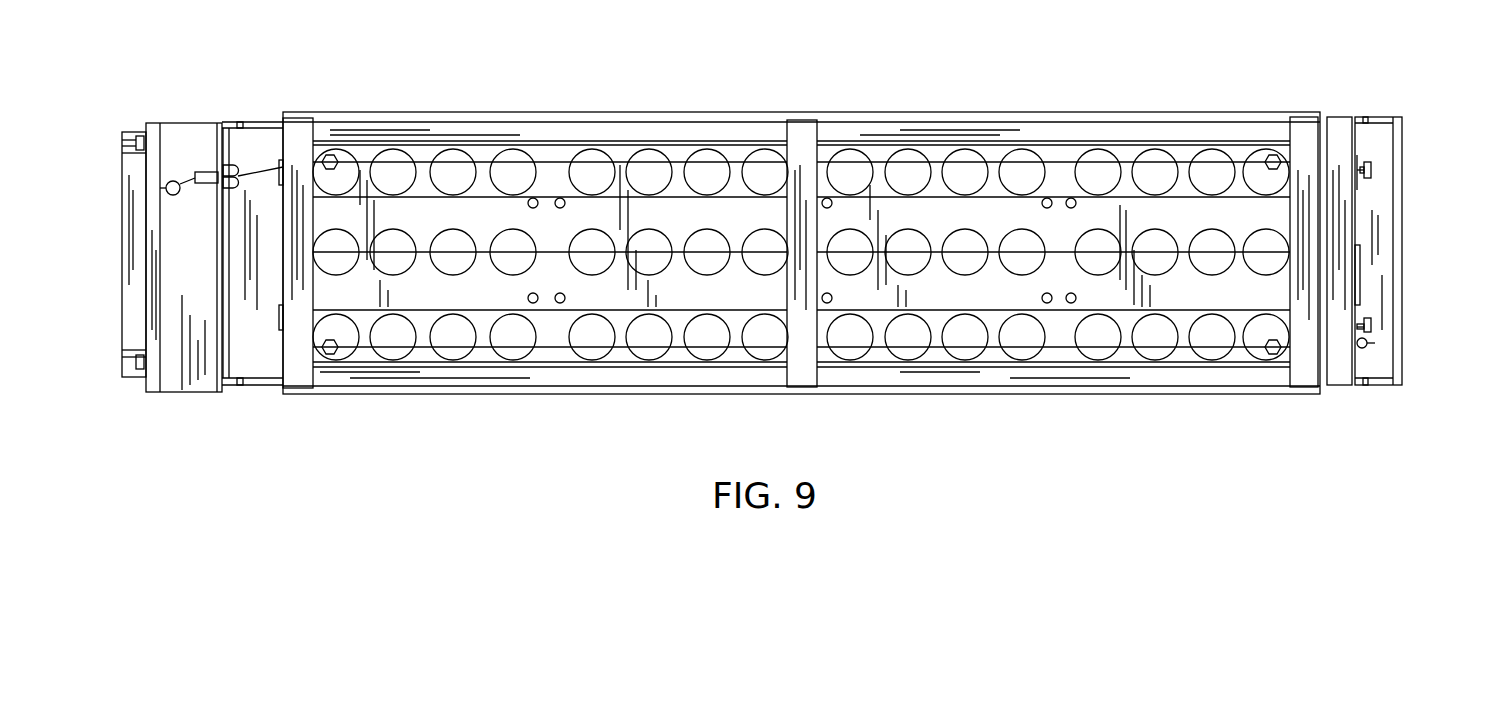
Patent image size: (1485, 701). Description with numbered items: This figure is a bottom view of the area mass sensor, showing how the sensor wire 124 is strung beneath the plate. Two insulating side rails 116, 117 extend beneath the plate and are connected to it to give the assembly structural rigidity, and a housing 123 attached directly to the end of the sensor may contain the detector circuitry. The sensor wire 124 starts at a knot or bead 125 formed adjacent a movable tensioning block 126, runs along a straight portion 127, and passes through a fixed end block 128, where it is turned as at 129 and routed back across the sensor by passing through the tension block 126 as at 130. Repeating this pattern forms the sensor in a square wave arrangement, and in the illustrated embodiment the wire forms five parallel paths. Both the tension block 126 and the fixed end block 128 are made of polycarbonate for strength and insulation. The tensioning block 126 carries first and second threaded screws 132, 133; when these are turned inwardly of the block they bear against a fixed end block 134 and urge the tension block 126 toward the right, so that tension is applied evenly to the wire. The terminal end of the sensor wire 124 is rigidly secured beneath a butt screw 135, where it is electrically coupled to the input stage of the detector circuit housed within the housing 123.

The first insulating side rail 116 is at (724, 376).
The second insulating side rail 117 is at (686, 132).
The housing 123 is at (202, 277).
The sensor wire 124 is at (935, 362).
The knot or bead 125 is at (1372, 346).
The movable tensioning block 126 is at (1345, 222).
The straight portion 127 is at (550, 348).
The fixed end block 128 is at (301, 376).
The turn of the sensor wire 129 is at (274, 338).
The wire pass through tension block 130 is at (1358, 276).
The first threaded screw 132 is at (1368, 166).
The second threaded screw 133 is at (1372, 321).
The fixed end block 134 is at (1302, 367).
The butt screw 135 is at (261, 165).